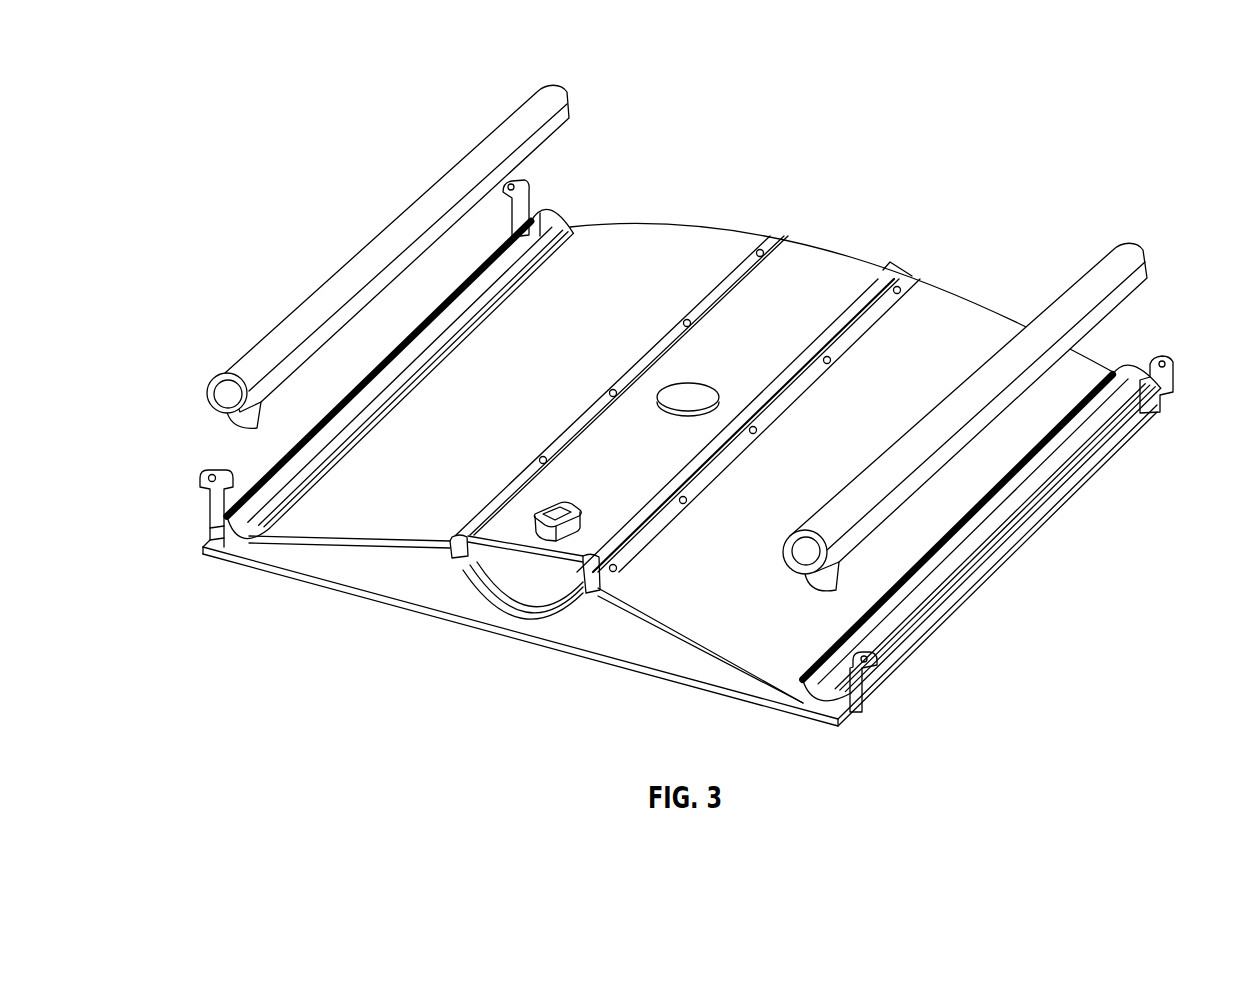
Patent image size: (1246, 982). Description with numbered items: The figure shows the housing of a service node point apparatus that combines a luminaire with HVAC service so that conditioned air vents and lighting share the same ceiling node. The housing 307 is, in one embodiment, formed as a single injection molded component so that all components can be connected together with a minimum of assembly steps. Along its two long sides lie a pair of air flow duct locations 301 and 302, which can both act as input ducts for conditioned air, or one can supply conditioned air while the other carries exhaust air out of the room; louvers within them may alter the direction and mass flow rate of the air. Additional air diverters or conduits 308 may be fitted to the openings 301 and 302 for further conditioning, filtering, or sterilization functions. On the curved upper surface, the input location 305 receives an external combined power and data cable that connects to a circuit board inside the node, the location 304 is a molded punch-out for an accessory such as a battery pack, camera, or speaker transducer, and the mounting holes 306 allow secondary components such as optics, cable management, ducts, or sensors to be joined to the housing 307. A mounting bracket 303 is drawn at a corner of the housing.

The air flow duct location 301 is at (283, 482).
The air flow duct location 302 is at (907, 590).
The mounting bracket 303 is at (203, 487).
The location 304 is at (678, 392).
The input location 305 is at (550, 528).
The mounting holes 306 is at (910, 281).
The housing 307 is at (713, 622).
The air diverter or conduit 308 is at (562, 90).